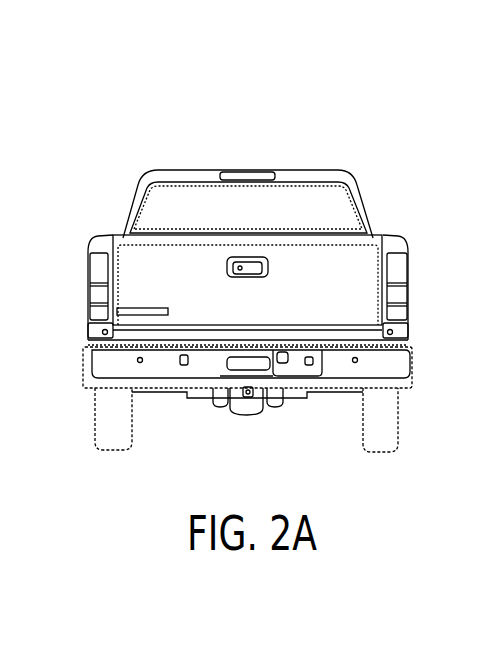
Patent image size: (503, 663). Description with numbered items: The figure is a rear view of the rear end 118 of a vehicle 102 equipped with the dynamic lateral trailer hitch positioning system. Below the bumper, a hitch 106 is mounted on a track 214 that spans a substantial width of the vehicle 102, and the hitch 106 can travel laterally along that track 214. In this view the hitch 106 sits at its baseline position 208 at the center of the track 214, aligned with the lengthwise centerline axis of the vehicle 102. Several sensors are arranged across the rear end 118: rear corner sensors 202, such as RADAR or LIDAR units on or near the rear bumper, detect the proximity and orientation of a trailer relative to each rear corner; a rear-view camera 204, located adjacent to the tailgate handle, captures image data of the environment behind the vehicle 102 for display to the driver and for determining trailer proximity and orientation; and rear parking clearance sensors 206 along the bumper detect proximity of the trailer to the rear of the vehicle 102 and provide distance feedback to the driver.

The vehicle 102 is at (145, 115).
The rear-view camera 204 is at (240, 267).
The rear corner sensors 202 is at (104, 331).
The rear parking clearance sensors 206 is at (140, 362).
The track 214 is at (197, 387).
The hitch 106 is at (248, 397).
The baseline position 208 is at (283, 421).
The rear end 118 is at (334, 408).